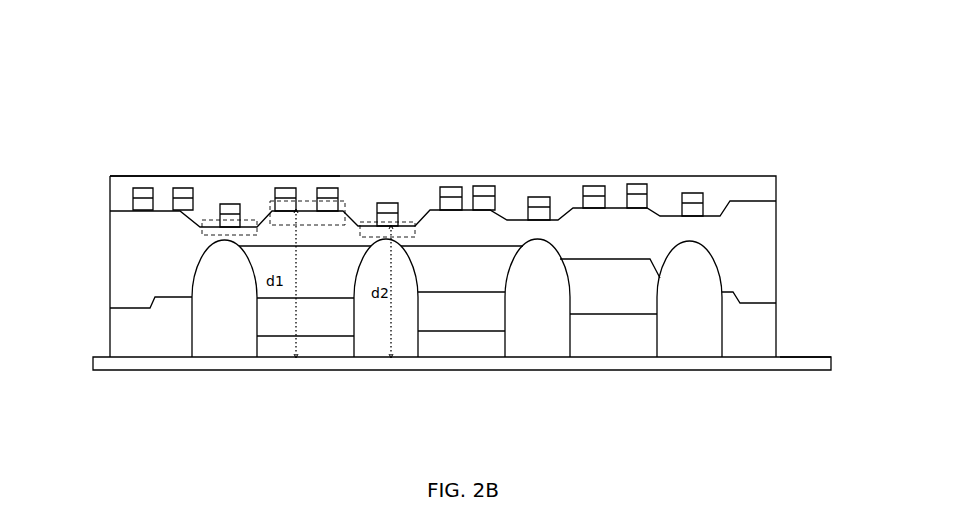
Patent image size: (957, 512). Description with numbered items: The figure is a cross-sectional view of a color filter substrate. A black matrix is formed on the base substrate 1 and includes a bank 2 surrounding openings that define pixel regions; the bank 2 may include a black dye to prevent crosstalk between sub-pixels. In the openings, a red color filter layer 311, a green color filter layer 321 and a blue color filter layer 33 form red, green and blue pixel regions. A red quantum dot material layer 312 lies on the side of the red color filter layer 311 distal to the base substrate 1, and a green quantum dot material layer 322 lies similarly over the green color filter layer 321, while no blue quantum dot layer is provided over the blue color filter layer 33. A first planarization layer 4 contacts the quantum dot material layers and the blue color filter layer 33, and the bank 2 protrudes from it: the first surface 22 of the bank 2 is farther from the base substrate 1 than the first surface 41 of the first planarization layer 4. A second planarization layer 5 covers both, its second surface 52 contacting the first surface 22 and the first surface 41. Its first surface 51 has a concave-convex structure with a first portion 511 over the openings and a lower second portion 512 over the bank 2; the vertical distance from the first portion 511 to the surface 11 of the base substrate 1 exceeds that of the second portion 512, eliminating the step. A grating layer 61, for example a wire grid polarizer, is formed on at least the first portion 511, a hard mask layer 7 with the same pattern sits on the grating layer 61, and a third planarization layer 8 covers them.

The base substrate 1 is at (816, 368).
The surface of the base substrate 11 is at (803, 357).
The bank 2 is at (499, 247).
The first surface of the bank 22 is at (700, 240).
The red color filter layer 311 is at (287, 345).
The red quantum dot material layer 312 is at (335, 320).
The green color filter layer 321 is at (443, 345).
The green quantum dot material layer 322 is at (493, 320).
The blue color filter layer 33 is at (640, 342).
The first planarization layer 4 is at (138, 327).
The first surface of the first planarization layer 41 is at (610, 258).
The second planarization layer 5 is at (123, 240).
The first surface of the second planarization layer 51 is at (418, 167).
The first portion 511 is at (252, 134).
The second portion 512 is at (252, 230).
The second surface of the second planarization layer 52 is at (352, 240).
The grating layer 61 is at (133, 198).
The hard mask layer 7 is at (150, 181).
The third planarization layer 8 is at (116, 185).